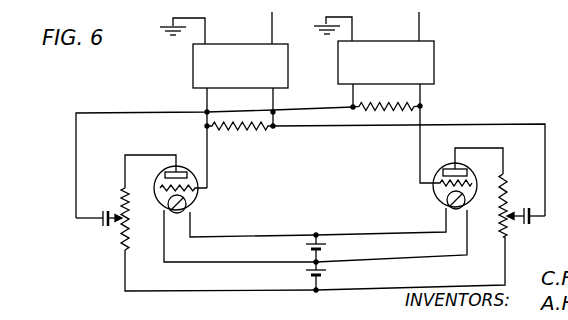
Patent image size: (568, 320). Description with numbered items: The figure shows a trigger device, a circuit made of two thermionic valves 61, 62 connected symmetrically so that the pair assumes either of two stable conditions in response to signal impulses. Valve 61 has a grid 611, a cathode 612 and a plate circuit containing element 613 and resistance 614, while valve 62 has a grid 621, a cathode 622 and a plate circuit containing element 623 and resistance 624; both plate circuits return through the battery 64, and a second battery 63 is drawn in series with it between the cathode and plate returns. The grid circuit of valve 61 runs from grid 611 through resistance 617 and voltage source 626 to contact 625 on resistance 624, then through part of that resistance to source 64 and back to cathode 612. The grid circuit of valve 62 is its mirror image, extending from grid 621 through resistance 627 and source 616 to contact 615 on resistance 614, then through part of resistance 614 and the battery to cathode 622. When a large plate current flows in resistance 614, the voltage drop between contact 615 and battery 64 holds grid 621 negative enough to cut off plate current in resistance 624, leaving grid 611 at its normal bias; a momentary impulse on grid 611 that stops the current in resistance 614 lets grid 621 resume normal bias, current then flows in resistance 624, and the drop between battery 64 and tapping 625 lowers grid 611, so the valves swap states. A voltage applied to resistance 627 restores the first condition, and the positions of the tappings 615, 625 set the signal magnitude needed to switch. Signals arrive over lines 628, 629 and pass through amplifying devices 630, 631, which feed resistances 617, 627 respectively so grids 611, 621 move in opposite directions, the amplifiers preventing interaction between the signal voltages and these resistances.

The thermionic valve 61 is at (196, 199).
The grid 611 is at (135, 220).
The cathode 612 is at (184, 212).
The plate circuit resistance 613 is at (167, 172).
The plate circuit resistance 614 is at (128, 230).
The contact 615 is at (117, 212).
The voltage source 616 is at (94, 233).
The grid circuit resistance 617 is at (219, 130).
The thermionic valve 62 is at (433, 191).
The grid 621 is at (443, 168).
The cathode 622 is at (448, 207).
The plate circuit element 623 is at (461, 170).
The plate circuit resistance 624 is at (501, 200).
The contact 625 is at (522, 189).
The voltage source 626 is at (527, 223).
The grid circuit resistance 627 is at (386, 98).
The line 628 is at (270, 28).
The line 629 is at (417, 25).
The amplifying device 630 is at (193, 67).
The amplifying device 631 is at (428, 60).
The battery 63 is at (327, 249).
The battery 64 is at (327, 275).